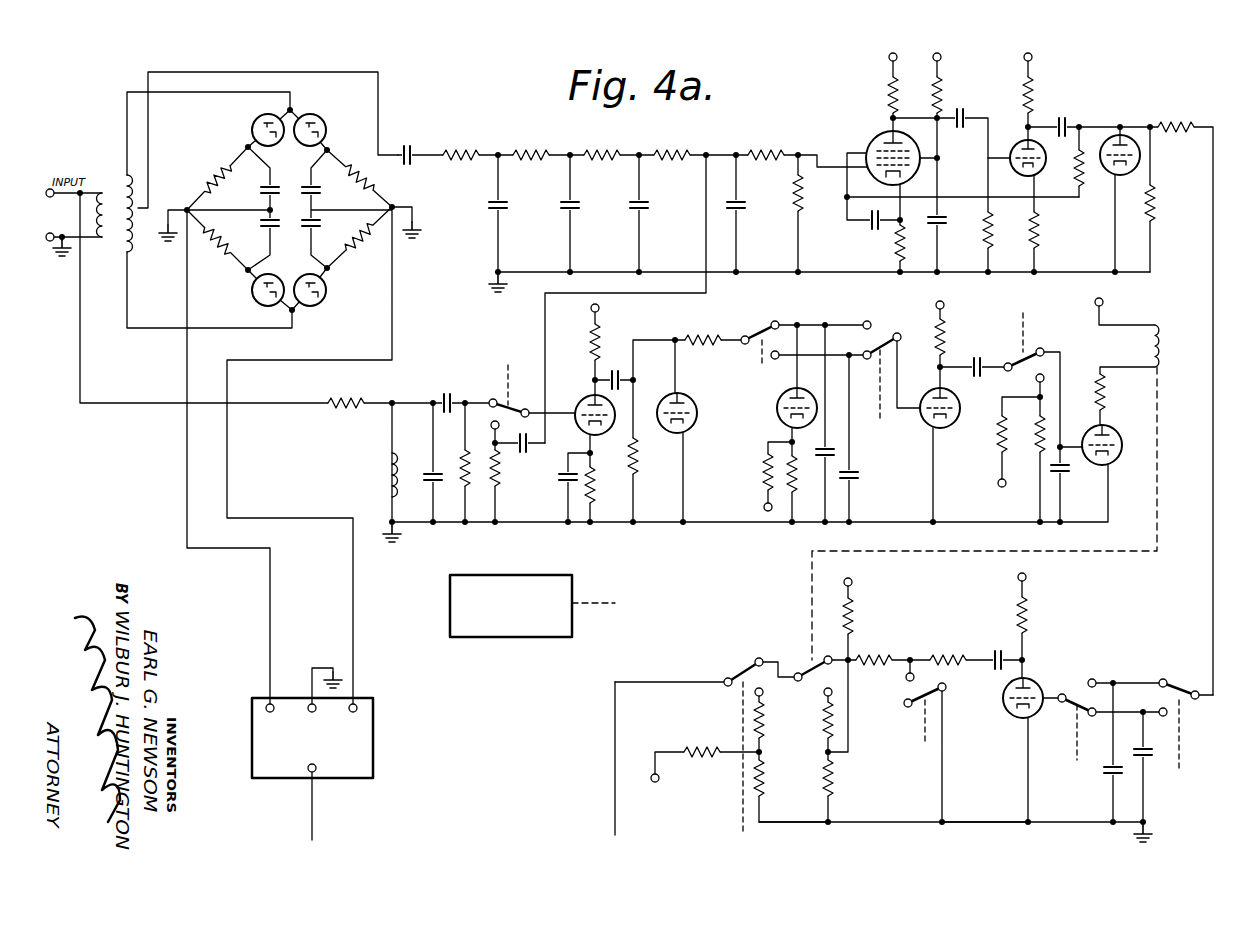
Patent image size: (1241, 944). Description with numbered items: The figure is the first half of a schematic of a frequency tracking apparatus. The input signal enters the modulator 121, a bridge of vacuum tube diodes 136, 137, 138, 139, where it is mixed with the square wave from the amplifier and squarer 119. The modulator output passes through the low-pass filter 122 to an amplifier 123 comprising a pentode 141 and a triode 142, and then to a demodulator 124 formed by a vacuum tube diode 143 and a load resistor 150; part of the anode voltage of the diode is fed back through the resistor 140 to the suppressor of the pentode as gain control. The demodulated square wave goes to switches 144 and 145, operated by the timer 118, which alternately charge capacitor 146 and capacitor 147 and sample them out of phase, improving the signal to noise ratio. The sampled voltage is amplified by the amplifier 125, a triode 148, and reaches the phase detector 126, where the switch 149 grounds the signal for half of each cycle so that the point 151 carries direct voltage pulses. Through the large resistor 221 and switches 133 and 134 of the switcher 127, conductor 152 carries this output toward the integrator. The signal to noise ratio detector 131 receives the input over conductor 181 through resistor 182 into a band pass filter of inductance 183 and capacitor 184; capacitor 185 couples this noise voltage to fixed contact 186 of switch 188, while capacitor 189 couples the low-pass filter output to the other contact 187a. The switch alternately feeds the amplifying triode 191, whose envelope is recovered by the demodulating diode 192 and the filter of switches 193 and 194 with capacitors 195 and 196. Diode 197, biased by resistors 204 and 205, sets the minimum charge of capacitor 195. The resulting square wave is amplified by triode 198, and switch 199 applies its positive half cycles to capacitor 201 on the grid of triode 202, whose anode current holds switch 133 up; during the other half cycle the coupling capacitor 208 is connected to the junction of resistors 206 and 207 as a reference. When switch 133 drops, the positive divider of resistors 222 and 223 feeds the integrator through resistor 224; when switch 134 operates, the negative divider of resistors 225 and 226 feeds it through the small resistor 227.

The timer 118 is at (450, 605).
The amplifier and squarer 119 is at (374, 742).
The modulator 121 is at (290, 405).
The low-pass filter 122 is at (686, 241).
The amplifier 123 is at (955, 162).
The demodulator 124 is at (1095, 372).
The amplifier 125 is at (998, 786).
The phase detector 126 is at (898, 801).
The switcher 127 is at (889, 705).
The signal to noise ratio detector 131 is at (743, 477).
The switch 133 is at (820, 670).
The switch 134 is at (745, 672).
The vacuum tube diode 136 is at (326, 123).
The vacuum tube diode 137 is at (326, 293).
The vacuum tube diode 138 is at (252, 296).
The vacuum tube diode 139 is at (252, 134).
The resistor 140 is at (1076, 175).
The pentode 141 is at (868, 145).
The triode 142 is at (1012, 138).
The vacuum tube diode 143 is at (1118, 178).
The switch 144 is at (1168, 680).
The switch 145 is at (1064, 694).
The capacitor 146 is at (1105, 780).
The capacitor 147 is at (1147, 756).
The triode 148 is at (1003, 690).
The switch 149 is at (905, 703).
The load resistor 150 is at (1152, 210).
The point 151 is at (917, 656).
The conductor 152 is at (615, 768).
The conductor 181 is at (82, 367).
The resistor 182 is at (341, 401).
The inductance 183 is at (388, 481).
The capacitor 184 is at (424, 470).
The capacitor 185 is at (447, 392).
The fixed contact 186 is at (490, 398).
The switch contact 187a is at (482, 419).
The switch 188 is at (522, 405).
The capacitor 189 is at (525, 452).
The amplifying triode 191 is at (586, 398).
The demodulating diode 192 is at (688, 398).
The switch 193 is at (756, 333).
The switch 194 is at (890, 330).
The capacitor 195 is at (822, 450).
The capacitor 196 is at (856, 478).
The diode 197 is at (778, 413).
The triode 198 is at (945, 428).
The switch 199 is at (1041, 348).
The capacitor 201 is at (1070, 472).
The triode 202 is at (1118, 462).
The resistor 204 is at (764, 478).
The resistor 205 is at (797, 482).
The resistor 206 is at (1000, 455).
The resistor 207 is at (1036, 455).
The coupling capacitor 208 is at (977, 356).
The resistor 221 is at (876, 656).
The resistor 222 is at (855, 616).
The resistor 223 is at (836, 772).
The resistor 224 is at (822, 725).
The resistor 225 is at (712, 731).
The resistor 226 is at (767, 780).
The resistor 227 is at (766, 717).